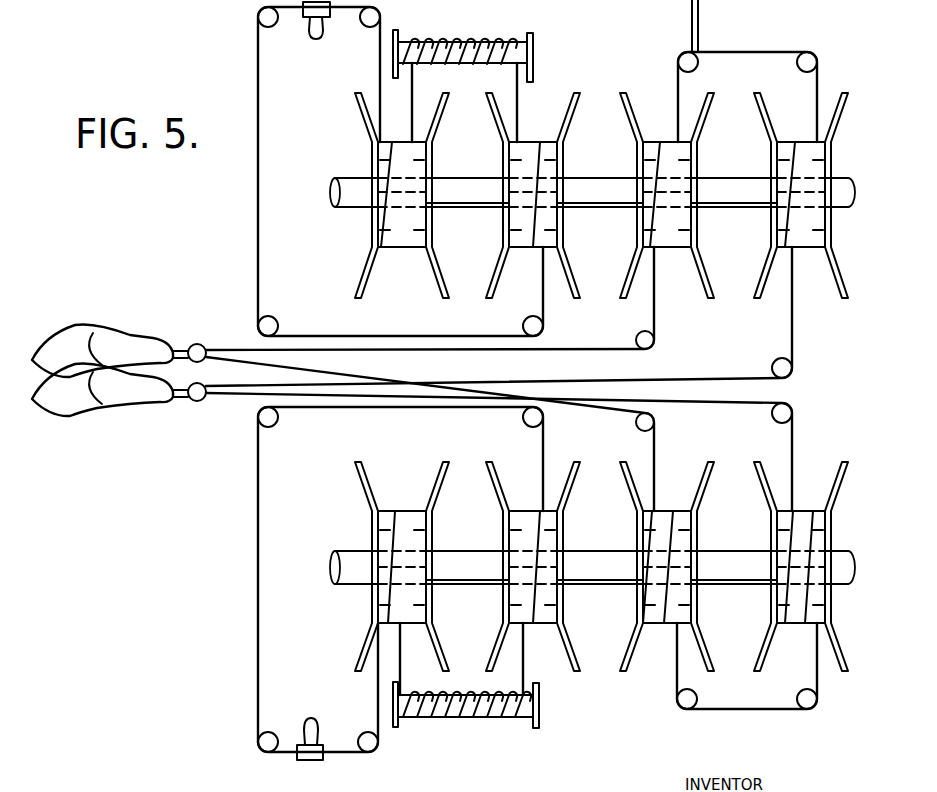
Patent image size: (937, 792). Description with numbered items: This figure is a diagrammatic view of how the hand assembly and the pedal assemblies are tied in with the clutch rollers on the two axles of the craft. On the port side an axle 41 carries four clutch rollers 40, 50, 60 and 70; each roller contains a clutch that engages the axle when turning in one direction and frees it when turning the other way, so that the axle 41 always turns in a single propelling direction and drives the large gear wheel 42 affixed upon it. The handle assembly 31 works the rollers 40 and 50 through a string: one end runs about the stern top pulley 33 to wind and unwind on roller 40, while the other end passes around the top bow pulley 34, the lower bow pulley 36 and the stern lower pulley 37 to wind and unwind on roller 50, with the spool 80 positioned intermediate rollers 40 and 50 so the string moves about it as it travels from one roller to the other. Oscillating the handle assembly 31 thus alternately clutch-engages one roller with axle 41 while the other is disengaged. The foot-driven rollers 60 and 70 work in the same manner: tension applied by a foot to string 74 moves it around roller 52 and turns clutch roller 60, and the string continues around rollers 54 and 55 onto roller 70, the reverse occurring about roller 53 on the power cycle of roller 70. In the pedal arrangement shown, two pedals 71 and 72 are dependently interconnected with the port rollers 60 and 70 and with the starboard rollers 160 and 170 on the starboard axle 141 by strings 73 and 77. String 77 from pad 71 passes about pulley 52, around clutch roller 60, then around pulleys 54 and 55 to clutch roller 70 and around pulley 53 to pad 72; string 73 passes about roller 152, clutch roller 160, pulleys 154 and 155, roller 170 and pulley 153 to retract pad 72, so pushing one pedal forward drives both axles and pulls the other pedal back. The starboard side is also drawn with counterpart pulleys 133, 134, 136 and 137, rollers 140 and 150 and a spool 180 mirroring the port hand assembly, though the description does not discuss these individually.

The handle assembly 31 is at (313, 762).
The stern top pulley 33 is at (378, 748).
The top bow pulley 34 is at (262, 752).
The lower bow pulley 36 is at (258, 418).
The stern lower pulley 37 is at (523, 423).
The clutch roller 40 is at (372, 595).
The axle 41 is at (595, 553).
The large gear wheel 42 is at (692, 16).
The clutch roller 50 is at (505, 597).
The pulley 52 is at (636, 425).
The pulley 53 is at (773, 420).
The pulley 54 is at (680, 708).
The pulley 55 is at (808, 710).
The clutch roller 60 is at (638, 597).
The clutch roller 70 is at (771, 597).
The pedal 71 is at (119, 350).
The pedal 72 is at (119, 389).
The string 73 is at (505, 348).
The string 74 is at (245, 362).
The string 77 is at (773, 721).
The spool 80 is at (464, 726).
The pulley 133 is at (380, 13).
The pulley 134 is at (258, 17).
The pulley 136 is at (258, 326).
The pulley 137 is at (543, 326).
The spool 140 is at (372, 214).
The axle 141 is at (592, 180).
The spool 150 is at (505, 224).
The roller 152 is at (655, 340).
The pulley 153 is at (776, 362).
The pulley 154 is at (695, 70).
The pulley 155 is at (803, 70).
The clutch roller 160 is at (640, 230).
The clutch roller 170 is at (772, 232).
The spring 180 is at (460, 37).